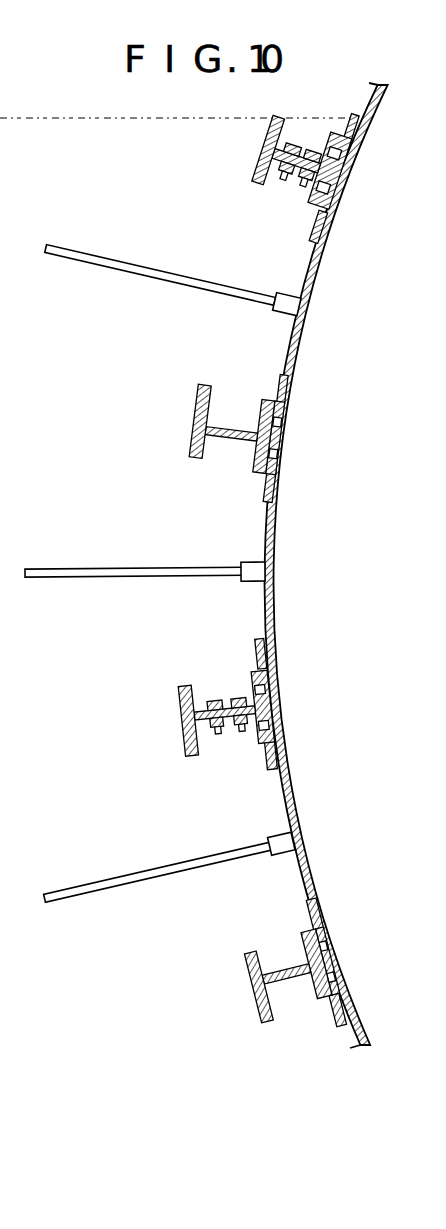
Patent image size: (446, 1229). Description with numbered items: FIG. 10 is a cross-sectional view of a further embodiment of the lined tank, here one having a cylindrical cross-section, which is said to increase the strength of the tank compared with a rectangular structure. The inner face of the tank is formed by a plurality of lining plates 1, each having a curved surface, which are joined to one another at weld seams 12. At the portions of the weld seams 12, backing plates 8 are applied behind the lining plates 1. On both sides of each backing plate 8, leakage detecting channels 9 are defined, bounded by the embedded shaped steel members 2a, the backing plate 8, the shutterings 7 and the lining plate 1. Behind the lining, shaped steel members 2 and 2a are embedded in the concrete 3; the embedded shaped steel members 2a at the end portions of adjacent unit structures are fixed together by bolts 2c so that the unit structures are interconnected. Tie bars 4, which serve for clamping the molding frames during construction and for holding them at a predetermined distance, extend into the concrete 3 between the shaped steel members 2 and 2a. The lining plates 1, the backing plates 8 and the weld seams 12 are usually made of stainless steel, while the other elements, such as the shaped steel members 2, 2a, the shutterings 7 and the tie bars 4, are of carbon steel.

The lining plate 1 is at (318, 261).
The shaped steel member 2 is at (196, 450).
The embedded shaped steel member 2a is at (258, 166).
The bolt 2c is at (240, 730).
The concrete 3 is at (178, 226).
The tie bar 4 is at (186, 285).
The shuttering 7 is at (287, 386).
The backing plate 8 is at (284, 452).
The leakage detecting channel 9 is at (288, 421).
The weld seam 12 is at (291, 443).